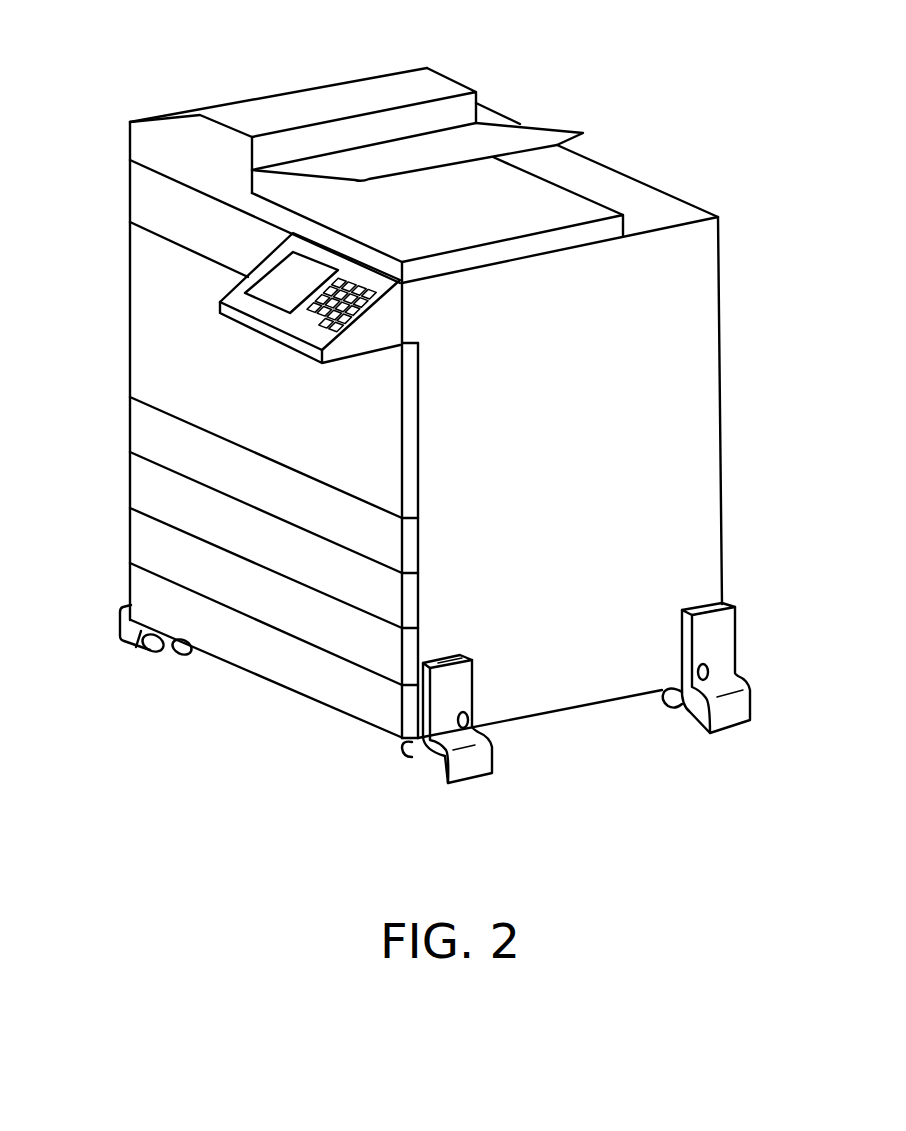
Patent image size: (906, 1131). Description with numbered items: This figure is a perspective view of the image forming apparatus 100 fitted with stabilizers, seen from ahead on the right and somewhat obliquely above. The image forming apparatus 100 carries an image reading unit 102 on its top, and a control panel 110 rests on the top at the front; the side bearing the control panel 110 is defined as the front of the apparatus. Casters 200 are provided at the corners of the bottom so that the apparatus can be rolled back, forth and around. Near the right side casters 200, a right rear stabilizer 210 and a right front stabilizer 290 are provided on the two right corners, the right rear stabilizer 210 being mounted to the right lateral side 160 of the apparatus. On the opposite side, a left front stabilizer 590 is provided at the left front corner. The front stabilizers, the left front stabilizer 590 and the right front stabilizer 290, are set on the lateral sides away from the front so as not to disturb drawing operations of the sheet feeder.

The image forming apparatus 100 is at (643, 147).
The image reading unit 102 is at (430, 80).
The control panel 110 is at (258, 312).
The right lateral side 160 is at (575, 692).
The caster 200 is at (673, 690).
The right rear stabilizer 210 is at (735, 723).
The right front stabilizer 290 is at (433, 763).
The left front stabilizer 590 is at (137, 640).